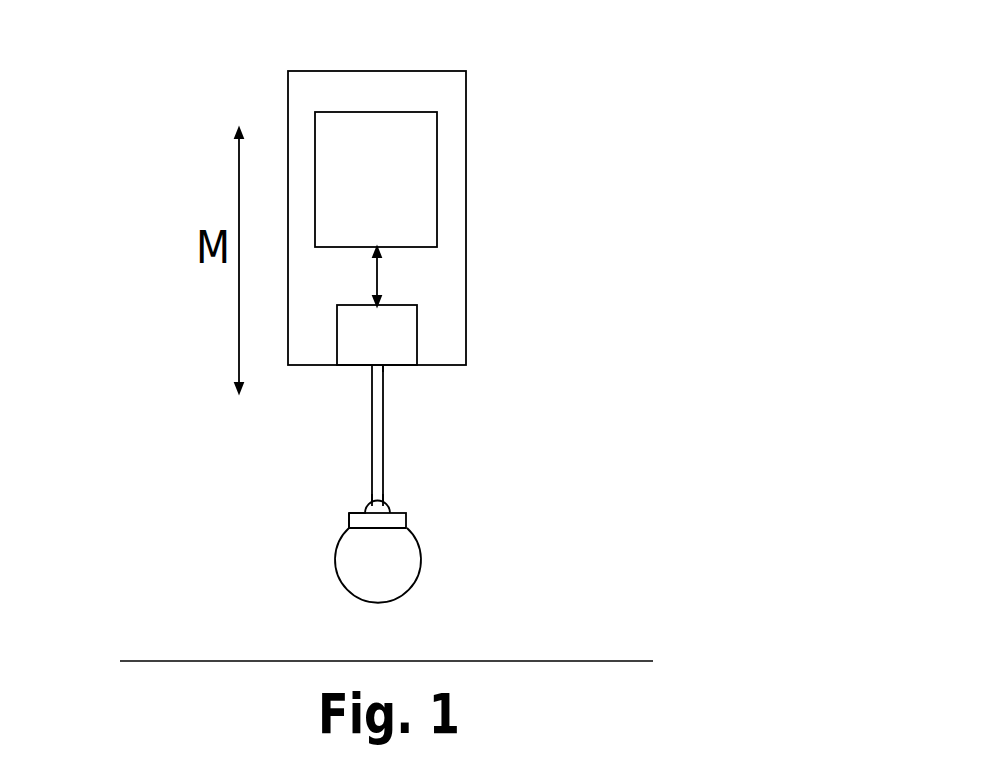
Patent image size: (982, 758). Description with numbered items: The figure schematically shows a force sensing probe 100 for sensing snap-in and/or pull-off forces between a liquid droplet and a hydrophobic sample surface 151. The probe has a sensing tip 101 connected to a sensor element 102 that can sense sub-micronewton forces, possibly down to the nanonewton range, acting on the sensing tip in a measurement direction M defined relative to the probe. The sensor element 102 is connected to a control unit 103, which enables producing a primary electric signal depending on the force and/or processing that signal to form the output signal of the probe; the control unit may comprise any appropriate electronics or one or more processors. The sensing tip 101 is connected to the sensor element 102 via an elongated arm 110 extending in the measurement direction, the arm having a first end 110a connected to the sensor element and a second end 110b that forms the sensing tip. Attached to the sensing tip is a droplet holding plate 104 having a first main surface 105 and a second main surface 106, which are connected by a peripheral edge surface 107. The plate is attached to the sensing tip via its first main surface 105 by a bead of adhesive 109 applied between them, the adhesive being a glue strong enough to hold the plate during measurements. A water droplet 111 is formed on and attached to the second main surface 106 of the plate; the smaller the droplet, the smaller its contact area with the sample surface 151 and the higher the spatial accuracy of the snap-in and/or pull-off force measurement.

The force sensing probe 100 is at (623, 217).
The sensing tip 101 is at (392, 506).
The sensor element 102 is at (400, 345).
The control unit 103 is at (433, 241).
The droplet holding plate 104 is at (409, 521).
The first main surface 105 is at (357, 512).
The second main surface 106 is at (362, 529).
The peripheral edge surface 107 is at (349, 522).
The bead of adhesive 109 is at (365, 505).
The elongated arm 110 is at (380, 434).
The first end 110a is at (385, 370).
The second end 110b is at (377, 497).
The water droplet 111 is at (393, 573).
The sample surface 151 is at (590, 661).